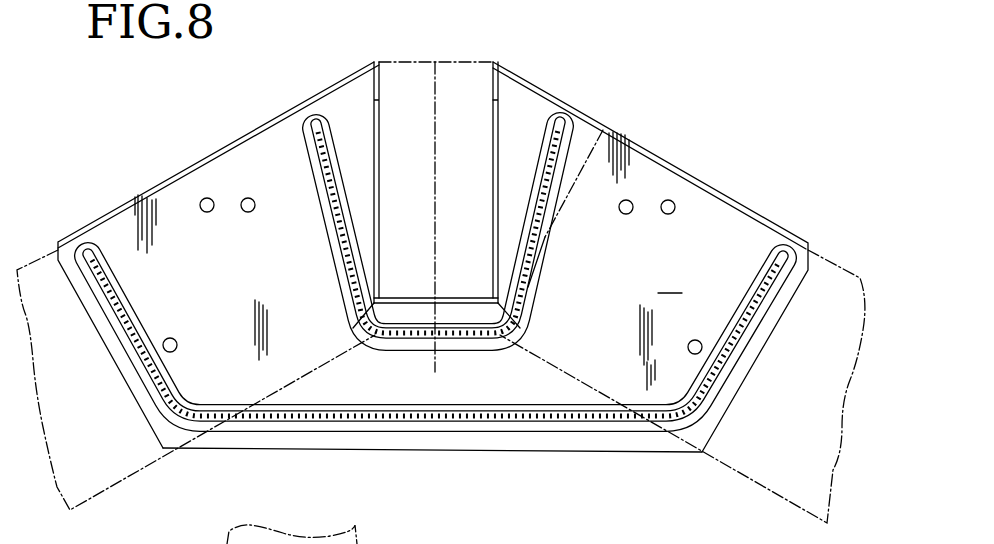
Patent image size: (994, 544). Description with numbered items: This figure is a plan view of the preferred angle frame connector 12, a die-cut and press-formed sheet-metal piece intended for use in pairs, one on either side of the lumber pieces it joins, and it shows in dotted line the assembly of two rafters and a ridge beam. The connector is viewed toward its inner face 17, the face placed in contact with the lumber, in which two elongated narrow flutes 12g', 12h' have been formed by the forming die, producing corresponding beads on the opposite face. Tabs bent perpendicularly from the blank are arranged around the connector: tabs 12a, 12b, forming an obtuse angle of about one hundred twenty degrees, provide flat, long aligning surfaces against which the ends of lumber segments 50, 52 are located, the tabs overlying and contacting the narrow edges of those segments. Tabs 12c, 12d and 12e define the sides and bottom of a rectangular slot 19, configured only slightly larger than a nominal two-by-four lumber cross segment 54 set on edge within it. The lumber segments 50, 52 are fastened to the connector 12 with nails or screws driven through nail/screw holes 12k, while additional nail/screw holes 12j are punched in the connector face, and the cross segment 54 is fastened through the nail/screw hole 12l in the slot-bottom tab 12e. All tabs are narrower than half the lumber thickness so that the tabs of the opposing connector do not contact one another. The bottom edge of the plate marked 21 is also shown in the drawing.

The angle frame connector 12 is at (637, 95).
The connector tab 12a is at (692, 178).
The connector tab 12b is at (166, 181).
The connector tab 12c is at (493, 110).
The connector tab 12d is at (412, 182).
The connector tab 12e is at (397, 298).
The flute 12g' is at (467, 229).
The flute 12h' is at (435, 338).
The nail/screw hole 12j is at (661, 210).
The nail/screw hole 12k is at (242, 211).
The nail/screw hole 12l is at (435, 300).
The inner face 17 is at (671, 283).
The rectangular slot 19 is at (482, 73).
The bottom edge of plate 21 is at (591, 452).
The lumber segment 50 is at (124, 467).
The lumber segment 52 is at (767, 465).
The lumber cross segment 54 is at (413, 77).